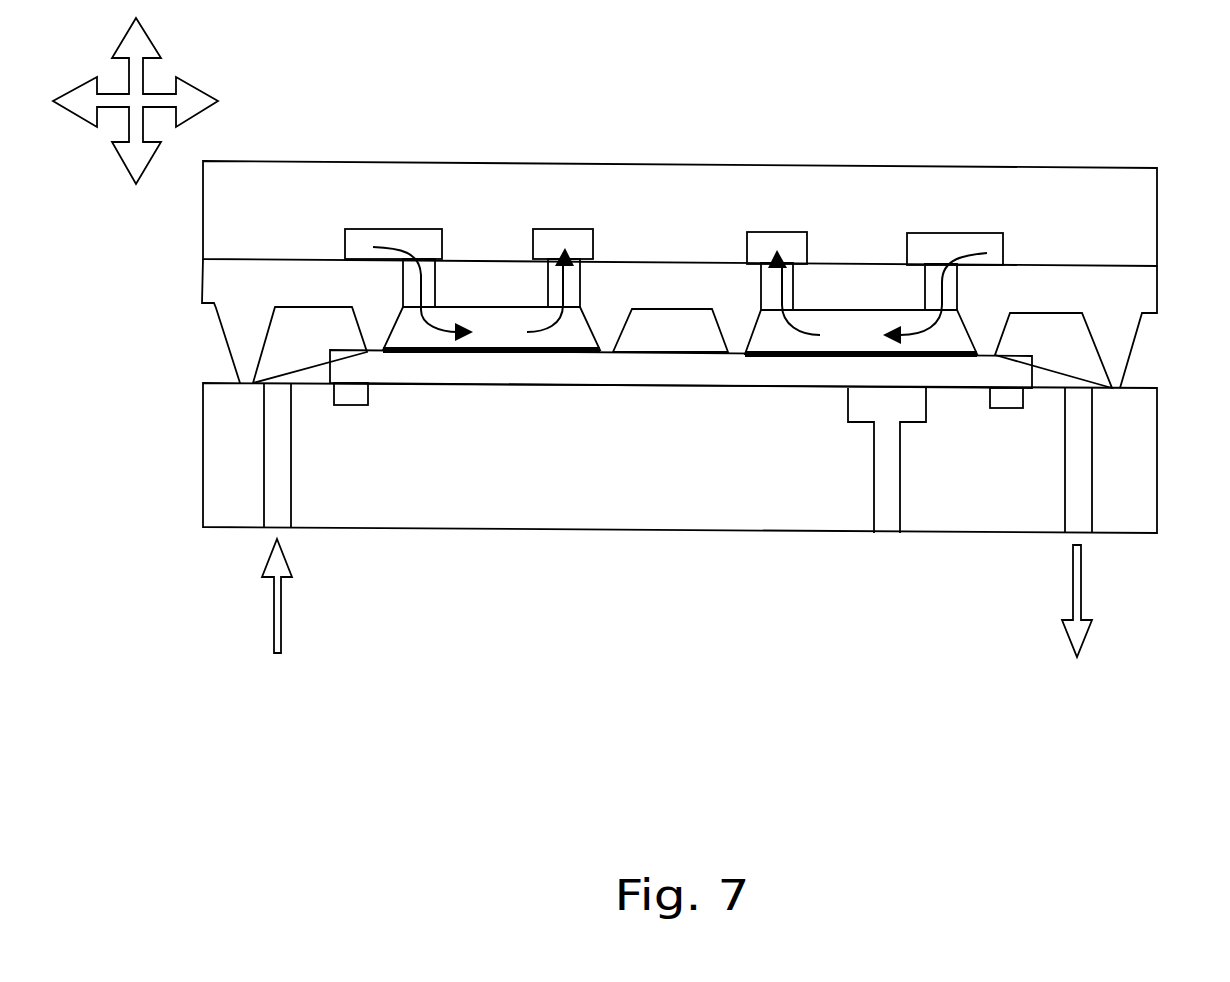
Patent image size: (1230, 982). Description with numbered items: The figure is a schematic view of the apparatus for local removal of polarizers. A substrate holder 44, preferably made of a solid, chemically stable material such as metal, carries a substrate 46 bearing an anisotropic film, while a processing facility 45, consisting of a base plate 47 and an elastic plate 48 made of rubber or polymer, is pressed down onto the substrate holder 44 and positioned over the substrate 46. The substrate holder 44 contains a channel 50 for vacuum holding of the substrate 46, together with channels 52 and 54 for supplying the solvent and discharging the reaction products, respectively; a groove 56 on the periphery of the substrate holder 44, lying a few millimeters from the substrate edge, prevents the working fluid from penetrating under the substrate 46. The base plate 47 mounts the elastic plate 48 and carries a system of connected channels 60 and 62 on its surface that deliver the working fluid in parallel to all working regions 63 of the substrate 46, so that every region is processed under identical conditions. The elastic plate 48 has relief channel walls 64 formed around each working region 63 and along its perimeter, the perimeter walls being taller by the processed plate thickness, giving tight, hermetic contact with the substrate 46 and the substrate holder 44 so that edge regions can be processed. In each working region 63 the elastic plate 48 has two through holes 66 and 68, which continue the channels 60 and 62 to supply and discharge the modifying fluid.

The substrate holder 44 is at (728, 486).
The processing facility 45 is at (140, 254).
The substrate 46 is at (653, 373).
The base plate 47 is at (219, 206).
The elastic plate 48 is at (213, 285).
The channel 50 is at (887, 520).
The channel 52 is at (277, 512).
The channel 54 is at (1079, 513).
The groove 56 is at (348, 397).
The channel 60 is at (795, 245).
The channel 62 is at (988, 243).
The working region 63 is at (508, 323).
The channel walls 64 is at (355, 315).
The through hole 66 is at (430, 278).
The through hole 68 is at (572, 287).